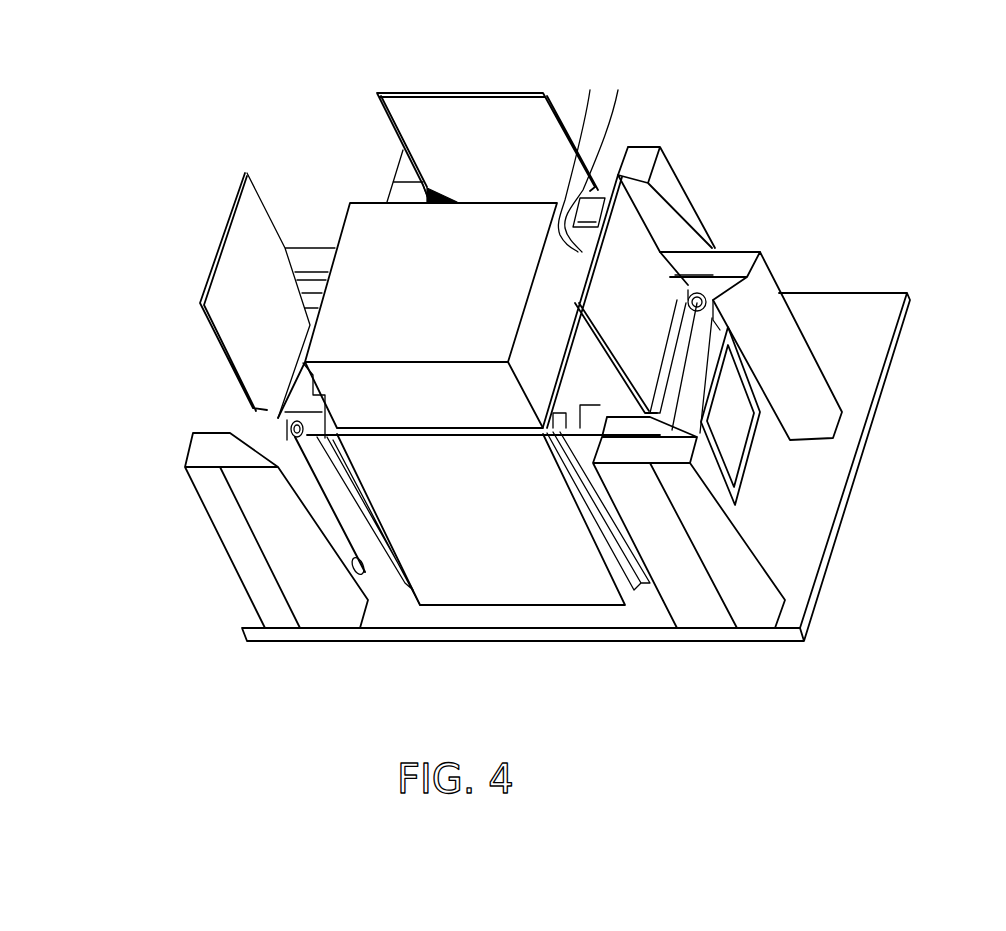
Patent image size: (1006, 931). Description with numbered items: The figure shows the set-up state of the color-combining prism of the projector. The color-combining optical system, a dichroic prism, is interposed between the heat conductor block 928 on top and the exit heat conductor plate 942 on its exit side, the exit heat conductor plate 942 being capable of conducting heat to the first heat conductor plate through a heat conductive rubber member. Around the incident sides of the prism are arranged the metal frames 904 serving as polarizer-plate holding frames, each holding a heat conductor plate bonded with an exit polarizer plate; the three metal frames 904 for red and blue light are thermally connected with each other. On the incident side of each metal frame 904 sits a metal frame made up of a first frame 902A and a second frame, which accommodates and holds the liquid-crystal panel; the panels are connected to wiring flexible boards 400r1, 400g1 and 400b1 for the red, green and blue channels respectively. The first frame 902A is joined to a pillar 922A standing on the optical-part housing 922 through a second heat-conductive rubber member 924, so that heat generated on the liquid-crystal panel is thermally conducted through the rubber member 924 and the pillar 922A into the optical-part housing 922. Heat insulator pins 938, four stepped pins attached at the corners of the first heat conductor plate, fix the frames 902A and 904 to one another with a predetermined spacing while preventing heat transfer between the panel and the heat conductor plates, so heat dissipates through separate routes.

The optical-part housing 922 is at (810, 535).
The pillar 922A is at (402, 153).
The heat conductor block 928 is at (362, 222).
The exit heat conductor plate 942 is at (502, 583).
The metal frame 904 is at (562, 203).
The second heat-conductive rubber member 924 is at (400, 190).
The heat insulator pins 938 is at (597, 203).
The first frame 902A is at (617, 163).
The wiring flexible board 400r1 is at (227, 218).
The wiring flexible board 400g1 is at (470, 92).
The wiring flexible board 400b1 is at (703, 256).